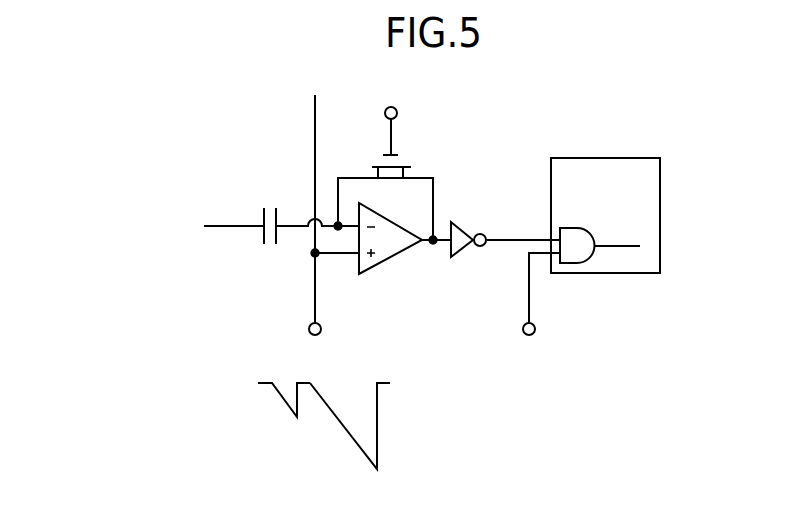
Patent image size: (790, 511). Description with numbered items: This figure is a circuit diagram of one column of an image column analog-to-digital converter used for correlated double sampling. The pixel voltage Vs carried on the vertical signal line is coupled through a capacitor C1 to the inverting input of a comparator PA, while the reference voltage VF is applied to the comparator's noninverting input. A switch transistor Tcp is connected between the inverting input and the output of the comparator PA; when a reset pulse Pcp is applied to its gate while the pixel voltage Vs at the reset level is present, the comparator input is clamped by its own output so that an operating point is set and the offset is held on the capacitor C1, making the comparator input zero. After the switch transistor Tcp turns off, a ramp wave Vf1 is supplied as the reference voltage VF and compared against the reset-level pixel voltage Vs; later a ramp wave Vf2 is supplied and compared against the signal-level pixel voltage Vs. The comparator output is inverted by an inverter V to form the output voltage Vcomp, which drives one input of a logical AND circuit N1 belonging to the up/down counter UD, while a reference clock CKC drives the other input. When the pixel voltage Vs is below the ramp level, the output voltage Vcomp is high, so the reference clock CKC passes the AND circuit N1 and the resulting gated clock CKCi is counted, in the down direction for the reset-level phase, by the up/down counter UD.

The pixel voltage Vs is at (234, 213).
The capacitor C1 is at (278, 212).
The reset pulse Pcp is at (390, 119).
The switch transistor Tcp is at (401, 163).
The comparator PA is at (388, 263).
The inverter V is at (459, 223).
The output voltage Vcomp is at (521, 228).
The reference voltage VF is at (330, 228).
The reference clock CKC is at (533, 307).
The up/down counter UD is at (598, 158).
The logical AND circuit N1 is at (575, 264).
The reference clock having passed through the logical AND circuit CKCi is at (617, 233).
The ramp wave Vf1 is at (282, 398).
The ramp wave Vf2 is at (345, 435).